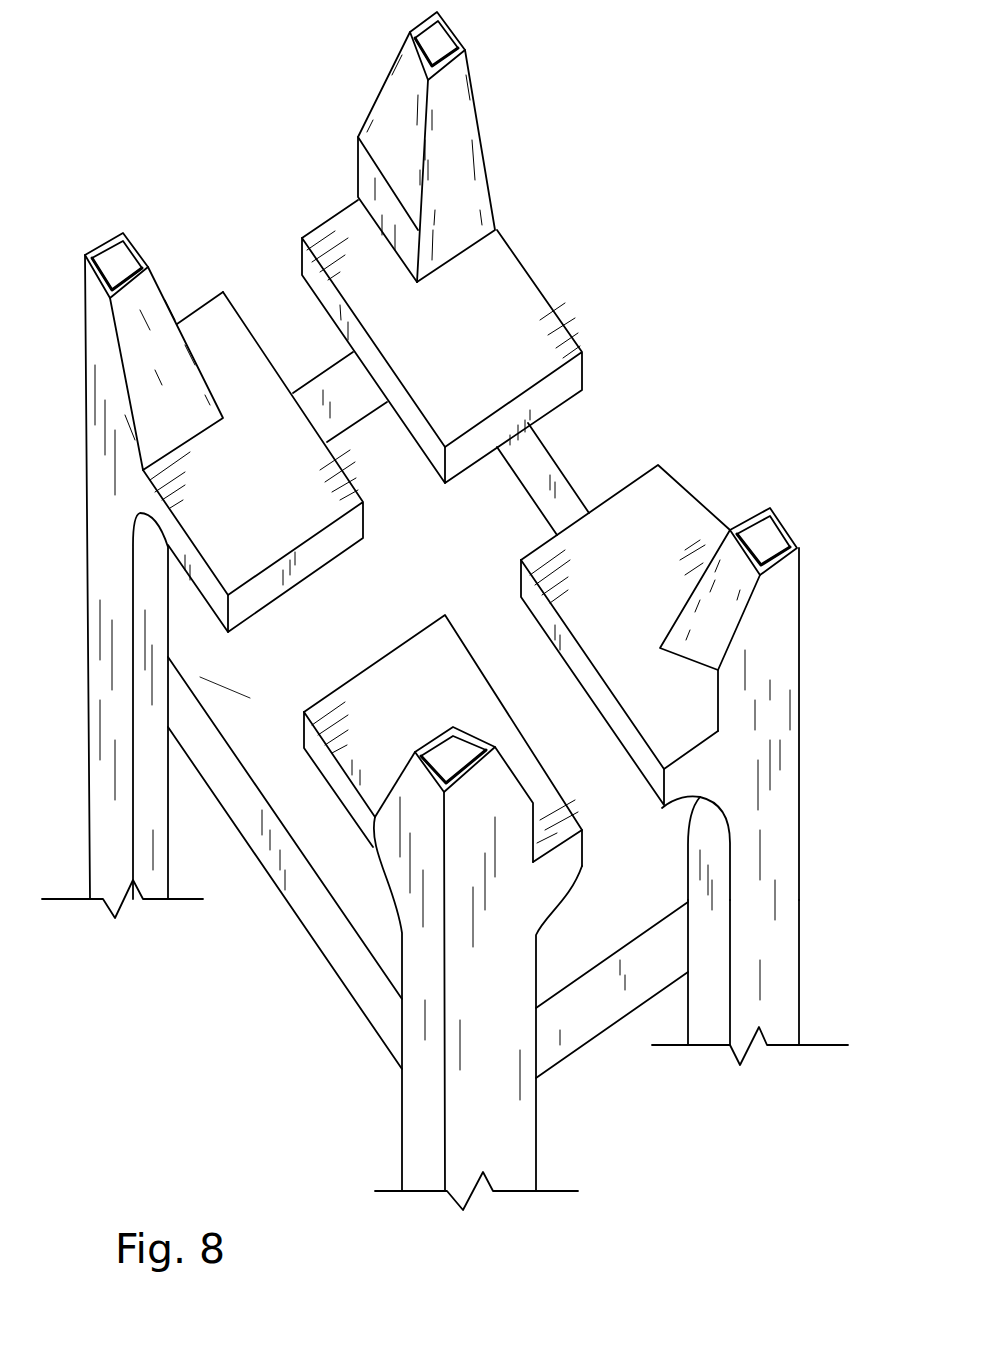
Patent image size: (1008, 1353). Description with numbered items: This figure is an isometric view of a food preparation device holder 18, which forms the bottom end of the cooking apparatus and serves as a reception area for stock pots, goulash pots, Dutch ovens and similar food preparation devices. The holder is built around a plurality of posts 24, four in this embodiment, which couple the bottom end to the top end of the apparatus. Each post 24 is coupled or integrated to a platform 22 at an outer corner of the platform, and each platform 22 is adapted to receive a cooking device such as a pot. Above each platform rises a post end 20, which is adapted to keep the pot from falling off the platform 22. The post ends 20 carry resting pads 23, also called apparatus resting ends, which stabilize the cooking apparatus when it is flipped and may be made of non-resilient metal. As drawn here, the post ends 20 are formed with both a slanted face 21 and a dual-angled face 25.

The food preparation device holder 18 is at (485, 82).
The post end 20 is at (775, 615).
The slanted face 21 is at (453, 152).
The platform 22 is at (635, 498).
The resting pad 23 is at (770, 522).
The post 24 is at (770, 935).
The dual-angled face 25 is at (715, 623).